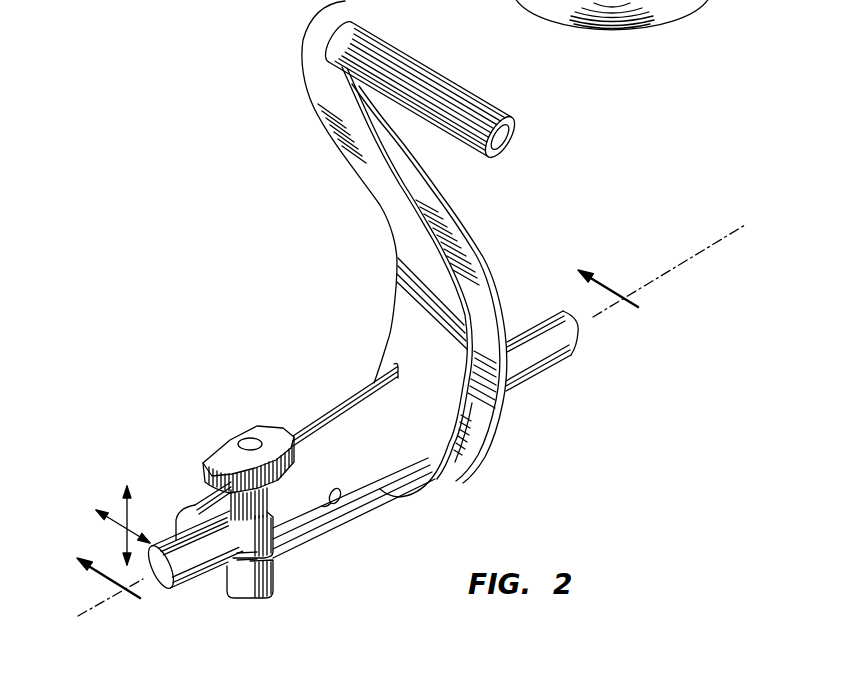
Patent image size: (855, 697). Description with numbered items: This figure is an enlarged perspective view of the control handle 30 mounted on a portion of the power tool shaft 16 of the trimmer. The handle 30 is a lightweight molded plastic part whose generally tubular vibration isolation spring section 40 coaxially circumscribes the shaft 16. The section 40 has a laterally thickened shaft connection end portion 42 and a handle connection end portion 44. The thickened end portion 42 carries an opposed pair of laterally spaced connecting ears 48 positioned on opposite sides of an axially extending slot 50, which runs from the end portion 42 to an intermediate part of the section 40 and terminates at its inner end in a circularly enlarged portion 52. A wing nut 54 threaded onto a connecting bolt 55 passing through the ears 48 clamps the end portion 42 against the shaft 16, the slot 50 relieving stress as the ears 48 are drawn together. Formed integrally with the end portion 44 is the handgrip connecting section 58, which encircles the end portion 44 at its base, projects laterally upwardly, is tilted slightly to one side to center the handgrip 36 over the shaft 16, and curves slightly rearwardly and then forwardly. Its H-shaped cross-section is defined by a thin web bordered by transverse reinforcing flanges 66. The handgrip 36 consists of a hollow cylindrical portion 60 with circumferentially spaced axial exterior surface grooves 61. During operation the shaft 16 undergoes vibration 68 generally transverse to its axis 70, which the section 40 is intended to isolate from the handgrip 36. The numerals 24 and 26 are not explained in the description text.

The shaft 16 is at (553, 390).
The disc 24 is at (612, 15).
The disc rim 26 is at (617, 30).
The handle 30 is at (397, 249).
The handgrip portion 36 is at (446, 81).
The vibration isolation spring section 40 is at (345, 385).
The shaft connection end portion 42 is at (238, 496).
The handle connection end portion 44 is at (470, 458).
The connecting ears 48 is at (268, 538).
The slot 50 is at (306, 532).
The circularly enlarged portion 52 is at (343, 510).
The wing nut 54 is at (240, 437).
The connecting bolt 55 is at (252, 438).
The handgrip connecting section 58 is at (480, 240).
The hollow cylindrical portion 60 is at (518, 130).
The exterior surface grooves 61 is at (438, 86).
The transverse reinforcing flanges 66 is at (452, 310).
The vibration 68 is at (118, 540).
The axis 70 is at (100, 594).